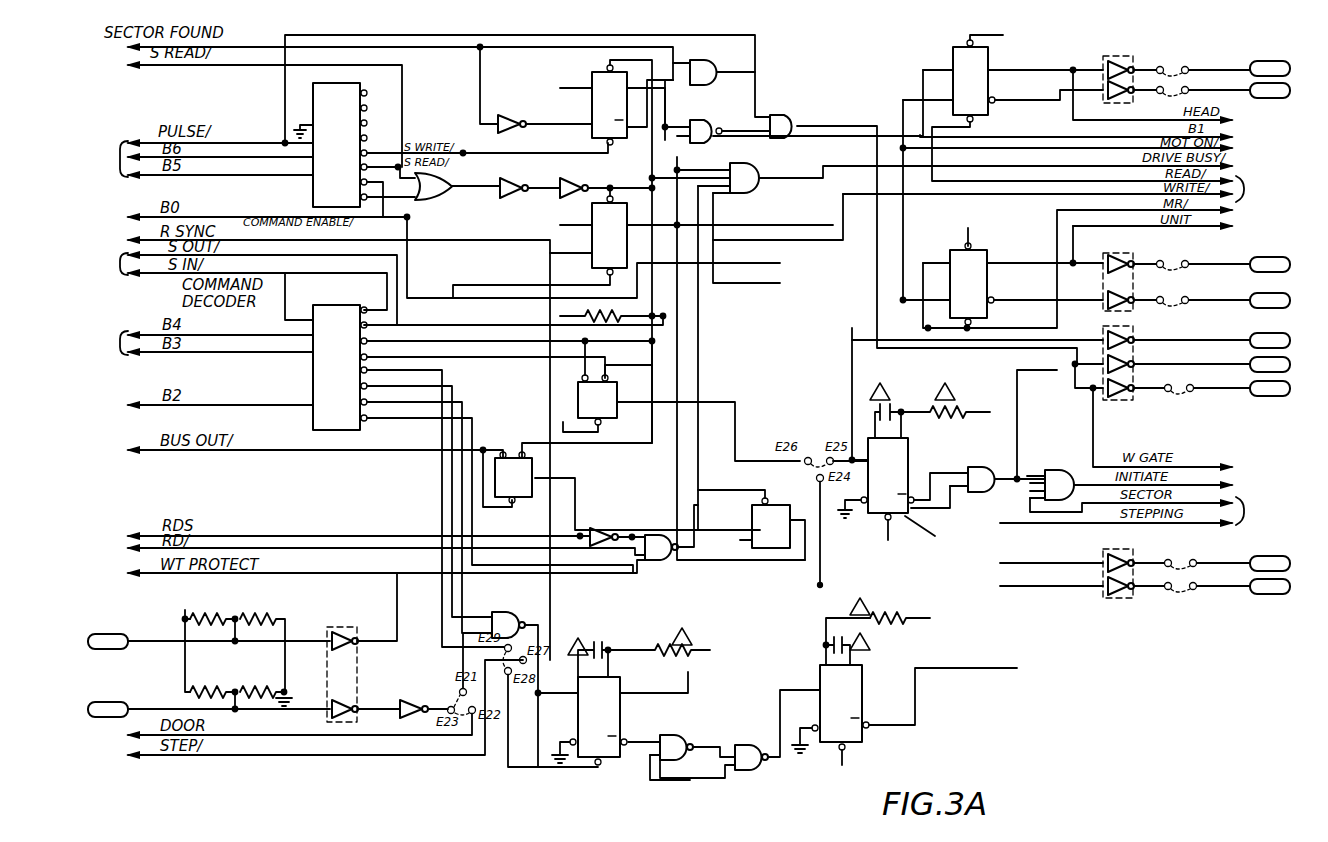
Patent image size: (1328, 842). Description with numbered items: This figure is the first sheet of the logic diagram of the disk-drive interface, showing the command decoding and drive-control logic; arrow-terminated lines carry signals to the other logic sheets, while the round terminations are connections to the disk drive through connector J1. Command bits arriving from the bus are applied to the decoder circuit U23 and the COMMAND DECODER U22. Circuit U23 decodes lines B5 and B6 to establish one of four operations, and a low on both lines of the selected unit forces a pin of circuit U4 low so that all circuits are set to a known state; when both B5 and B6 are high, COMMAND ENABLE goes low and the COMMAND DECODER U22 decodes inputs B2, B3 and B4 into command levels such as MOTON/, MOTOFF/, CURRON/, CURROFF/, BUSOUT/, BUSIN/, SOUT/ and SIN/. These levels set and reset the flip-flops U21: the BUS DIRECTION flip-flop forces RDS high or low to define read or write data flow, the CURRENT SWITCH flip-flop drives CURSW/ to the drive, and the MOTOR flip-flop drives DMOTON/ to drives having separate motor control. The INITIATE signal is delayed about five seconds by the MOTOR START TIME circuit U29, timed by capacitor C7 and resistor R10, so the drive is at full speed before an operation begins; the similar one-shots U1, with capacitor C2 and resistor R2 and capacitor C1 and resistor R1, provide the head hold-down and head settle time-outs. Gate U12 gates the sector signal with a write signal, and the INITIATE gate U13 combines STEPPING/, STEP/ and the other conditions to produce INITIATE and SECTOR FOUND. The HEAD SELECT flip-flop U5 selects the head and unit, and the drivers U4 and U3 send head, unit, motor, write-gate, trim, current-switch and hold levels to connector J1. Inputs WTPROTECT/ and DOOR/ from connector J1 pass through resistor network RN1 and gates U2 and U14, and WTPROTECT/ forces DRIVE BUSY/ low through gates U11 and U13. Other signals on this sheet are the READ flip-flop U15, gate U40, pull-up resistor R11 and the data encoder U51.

The decoder circuit U23 is at (446, 142).
The COMMAND DECODER U22 is at (479, 458).
The logic gate U40 is at (453, 196).
The gate U14 is at (518, 382).
The READ flip-flop U15 is at (643, 251).
The gate U12 is at (875, 272).
The data encoder U51 is at (717, 121).
The INITIATE gate U13 is at (941, 329).
The HEAD SELECT flip-flop U5 is at (972, 241).
The logic circuit U4 is at (1173, 170).
The logic component U3 is at (1125, 469).
The connector J1 is at (678, 382).
The resistor network RN1 is at (235, 649).
The gate U2 is at (356, 651).
The gate U11 is at (643, 642).
The flip-flop U21 is at (630, 450).
The resistor 470 R11 is at (595, 314).
The MOTOR START TIME U29 is at (880, 464).
The capacitor C7 is at (890, 410).
The resistor R10 is at (959, 401).
The logic component U1 is at (784, 682).
The capacitor C2 is at (589, 646).
The resistor R2 is at (671, 637).
The capacitor C1 is at (847, 641).
The resistor R1 is at (902, 611).